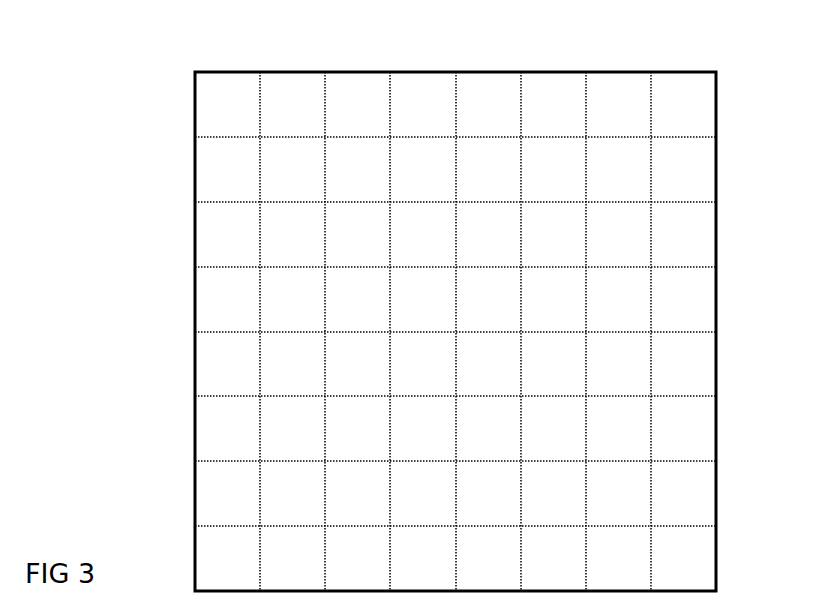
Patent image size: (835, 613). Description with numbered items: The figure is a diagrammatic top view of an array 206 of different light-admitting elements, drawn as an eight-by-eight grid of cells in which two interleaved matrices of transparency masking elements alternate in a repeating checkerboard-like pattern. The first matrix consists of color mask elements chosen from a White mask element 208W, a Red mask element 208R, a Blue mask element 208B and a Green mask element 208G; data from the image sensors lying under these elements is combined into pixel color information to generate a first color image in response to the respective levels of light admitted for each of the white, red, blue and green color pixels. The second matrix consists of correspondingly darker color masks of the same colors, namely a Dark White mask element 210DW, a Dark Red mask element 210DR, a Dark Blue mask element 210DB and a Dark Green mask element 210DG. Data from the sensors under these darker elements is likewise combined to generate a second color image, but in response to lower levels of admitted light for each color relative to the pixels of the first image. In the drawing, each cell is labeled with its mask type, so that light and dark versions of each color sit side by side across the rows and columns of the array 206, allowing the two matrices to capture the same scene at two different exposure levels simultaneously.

The array of different light-admitting elements 206 is at (140, 126).
The White mask element 208W is at (210, 97).
The Dark White mask element 210DW is at (285, 85).
The Red mask element 208R is at (362, 88).
The Dark Red mask element 210DR is at (432, 86).
The Dark Green mask element 210DG is at (633, 160).
The Green mask element 208G is at (698, 160).
The Blue mask element 208B is at (213, 300).
The Dark Blue mask element 210DB is at (278, 315).